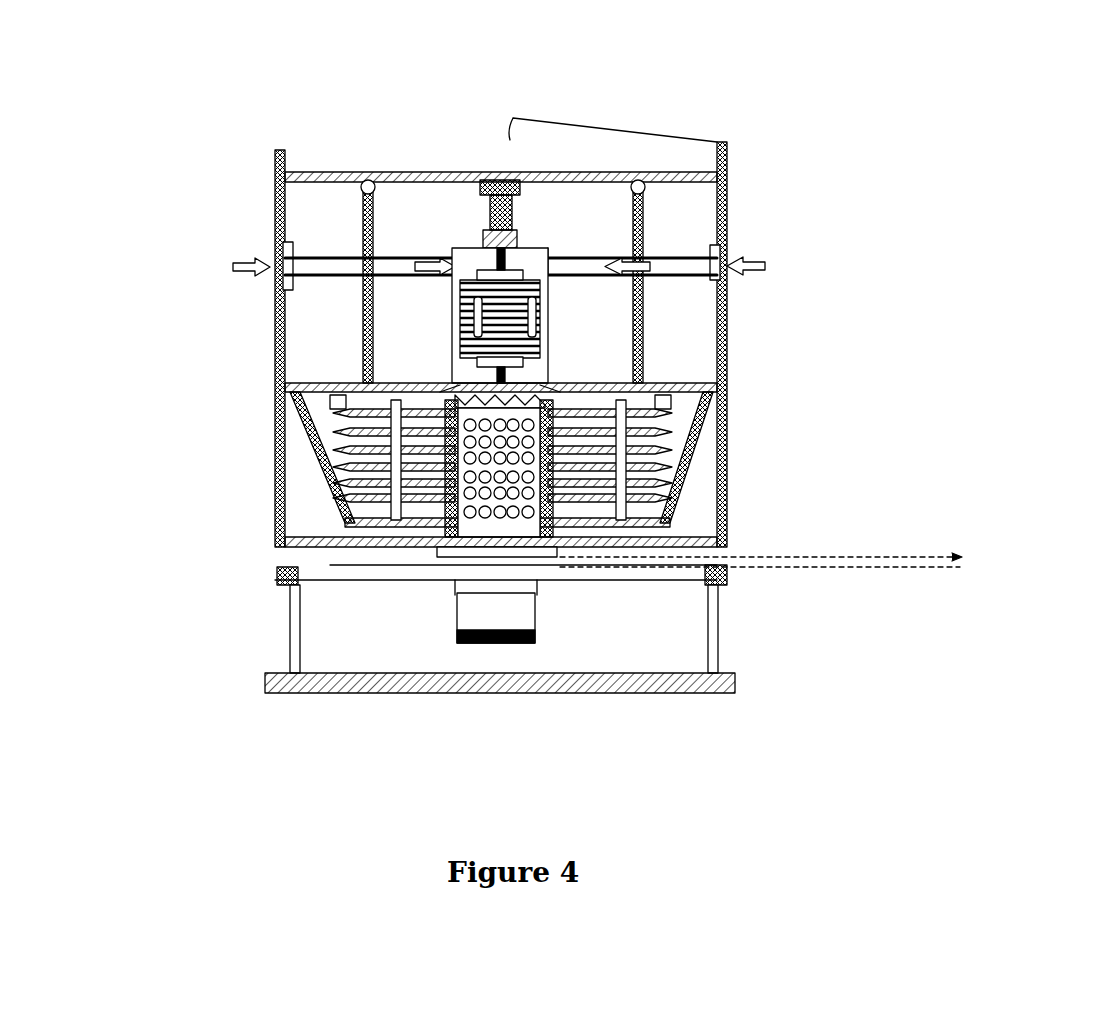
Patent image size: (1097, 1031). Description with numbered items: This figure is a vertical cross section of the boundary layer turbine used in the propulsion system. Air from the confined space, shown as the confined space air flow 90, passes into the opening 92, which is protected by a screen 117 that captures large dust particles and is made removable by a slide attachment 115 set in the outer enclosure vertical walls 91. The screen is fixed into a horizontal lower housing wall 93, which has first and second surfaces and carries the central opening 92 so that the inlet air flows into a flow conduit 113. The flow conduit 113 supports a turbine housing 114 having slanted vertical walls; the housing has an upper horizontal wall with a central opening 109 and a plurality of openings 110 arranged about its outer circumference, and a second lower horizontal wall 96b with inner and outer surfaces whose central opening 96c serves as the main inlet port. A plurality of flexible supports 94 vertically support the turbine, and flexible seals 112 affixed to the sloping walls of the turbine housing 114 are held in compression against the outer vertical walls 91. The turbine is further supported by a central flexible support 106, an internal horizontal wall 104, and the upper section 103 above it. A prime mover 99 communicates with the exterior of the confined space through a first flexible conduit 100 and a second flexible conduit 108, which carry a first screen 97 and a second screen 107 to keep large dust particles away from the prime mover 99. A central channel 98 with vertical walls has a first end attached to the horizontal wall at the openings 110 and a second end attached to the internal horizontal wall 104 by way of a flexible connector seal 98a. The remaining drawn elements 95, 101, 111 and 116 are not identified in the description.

The confined space air flow 90 is at (457, 626).
The outer enclosure vertical walls 91 is at (274, 577).
The central opening 92 is at (455, 590).
The horizontal lower housing wall 93 is at (285, 543).
The flexible supports 94 is at (345, 522).
The hopper rim 95 is at (300, 388).
The second lower horizontal wall 96b is at (335, 472).
The central opening 96c is at (340, 527).
The first screen 97 is at (266, 243).
The central channel 98 is at (519, 169).
The flexible connector seal 98a is at (626, 191).
The prime mover 99 is at (449, 313).
The first flexible conduit 100 is at (272, 305).
The feed direction arrow 101 is at (340, 250).
The upper section 103 is at (356, 228).
The internal horizontal wall 104 is at (638, 178).
The central flexible support 106 is at (520, 222).
The second screen 107 is at (678, 268).
The second flexible conduit 108 is at (550, 284).
The central opening 109 is at (645, 300).
The plurality of openings 110 is at (662, 384).
The housing wall 111 is at (730, 388).
The flexible seals 112 is at (706, 398).
The flow conduit 113 is at (686, 485).
The turbine housing 114 is at (682, 522).
The slide attachment 115 is at (740, 548).
The lower frame 116 is at (614, 567).
The screen 117 is at (547, 553).